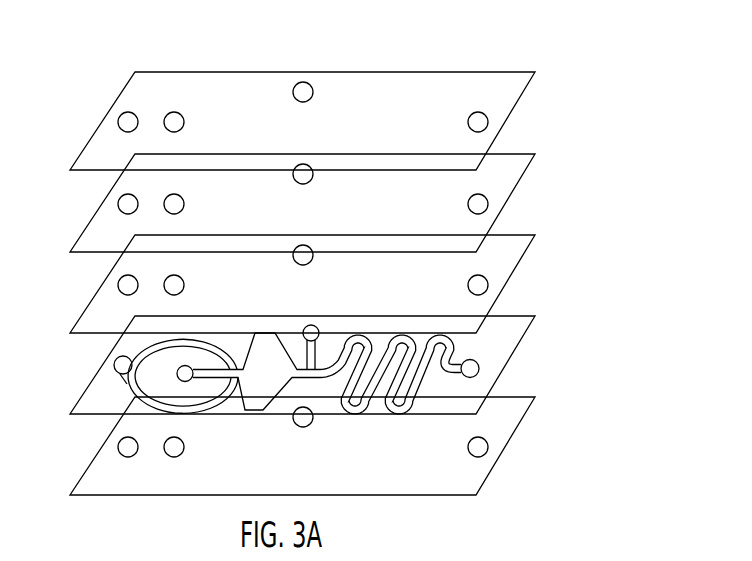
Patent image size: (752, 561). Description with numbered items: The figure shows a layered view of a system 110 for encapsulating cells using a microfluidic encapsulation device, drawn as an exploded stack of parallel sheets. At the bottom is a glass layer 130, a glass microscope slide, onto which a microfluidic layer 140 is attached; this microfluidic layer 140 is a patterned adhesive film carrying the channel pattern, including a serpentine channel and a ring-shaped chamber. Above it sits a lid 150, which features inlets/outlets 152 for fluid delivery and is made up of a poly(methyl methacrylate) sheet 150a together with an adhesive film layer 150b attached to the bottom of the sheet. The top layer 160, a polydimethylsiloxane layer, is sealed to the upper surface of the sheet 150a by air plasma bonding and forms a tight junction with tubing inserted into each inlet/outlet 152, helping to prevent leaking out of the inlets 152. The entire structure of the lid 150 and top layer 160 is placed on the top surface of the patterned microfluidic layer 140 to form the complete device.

The system 110 is at (113, 62).
The glass layer 130 is at (522, 417).
The microfluidic layer 140 is at (520, 338).
The lid 150 is at (623, 72).
The poly(methyl methacrylate) sheet 150a is at (516, 257).
The adhesive film layer 150b is at (521, 175).
The inlets/outlets 152 is at (184, 202).
The top layer 160 is at (519, 98).